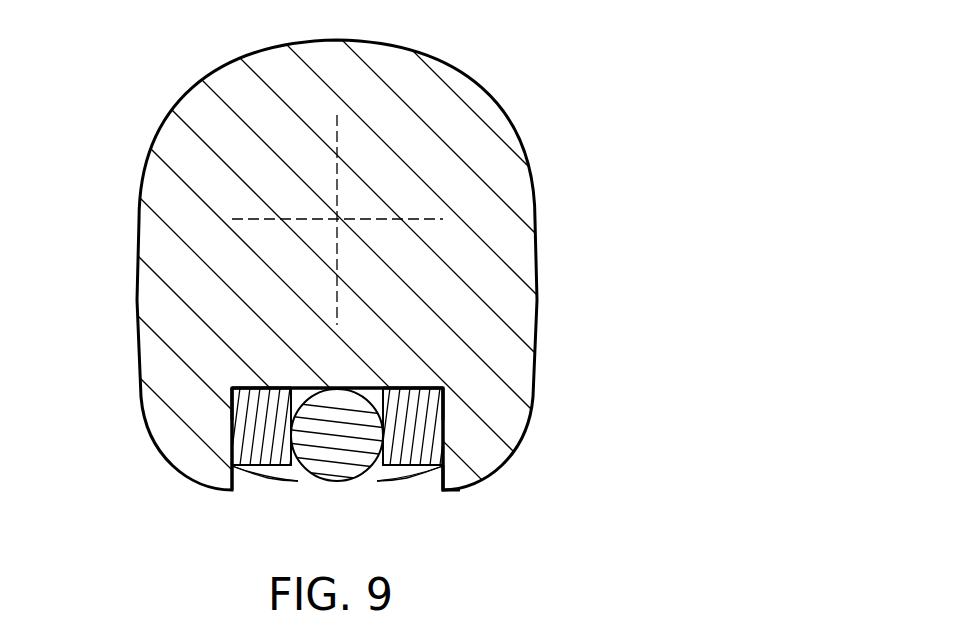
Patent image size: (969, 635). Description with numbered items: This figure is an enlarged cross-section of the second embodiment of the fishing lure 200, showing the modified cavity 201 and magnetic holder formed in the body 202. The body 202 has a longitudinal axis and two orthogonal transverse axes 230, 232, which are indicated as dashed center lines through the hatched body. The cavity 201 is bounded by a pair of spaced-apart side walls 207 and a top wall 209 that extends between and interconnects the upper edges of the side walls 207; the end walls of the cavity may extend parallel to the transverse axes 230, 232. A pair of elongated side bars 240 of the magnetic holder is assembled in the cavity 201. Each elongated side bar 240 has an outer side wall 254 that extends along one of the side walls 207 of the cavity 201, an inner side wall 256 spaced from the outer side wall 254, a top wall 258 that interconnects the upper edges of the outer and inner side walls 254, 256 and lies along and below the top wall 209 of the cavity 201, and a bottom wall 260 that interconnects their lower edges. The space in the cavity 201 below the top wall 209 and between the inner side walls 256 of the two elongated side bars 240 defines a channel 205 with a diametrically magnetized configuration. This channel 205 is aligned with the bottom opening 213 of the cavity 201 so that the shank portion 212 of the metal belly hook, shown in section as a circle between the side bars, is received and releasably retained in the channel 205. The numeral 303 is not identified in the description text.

The fishing lure 200 is at (538, 57).
The body 202 is at (543, 200).
The transverse axis 232 is at (337, 132).
The transverse axis 230 is at (418, 218).
The top wall 209 is at (252, 388).
The channel 205 is at (382, 388).
The top wall 258 is at (238, 388).
The inner side wall 256 is at (232, 418).
The side wall 207 is at (232, 437).
The outer side wall 254 is at (232, 462).
The bottom wall 260 is at (228, 476).
The shank portion 212 is at (313, 480).
The cavity 201 is at (253, 483).
The elongated side bar 240 is at (283, 475).
The retaining surface 303 is at (390, 497).
The bottom opening 213 is at (443, 489).